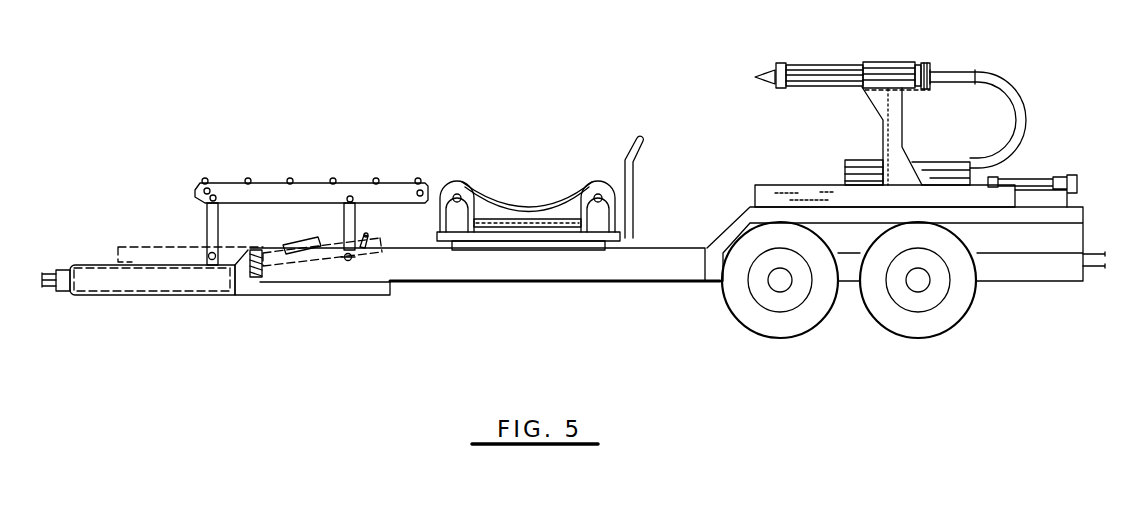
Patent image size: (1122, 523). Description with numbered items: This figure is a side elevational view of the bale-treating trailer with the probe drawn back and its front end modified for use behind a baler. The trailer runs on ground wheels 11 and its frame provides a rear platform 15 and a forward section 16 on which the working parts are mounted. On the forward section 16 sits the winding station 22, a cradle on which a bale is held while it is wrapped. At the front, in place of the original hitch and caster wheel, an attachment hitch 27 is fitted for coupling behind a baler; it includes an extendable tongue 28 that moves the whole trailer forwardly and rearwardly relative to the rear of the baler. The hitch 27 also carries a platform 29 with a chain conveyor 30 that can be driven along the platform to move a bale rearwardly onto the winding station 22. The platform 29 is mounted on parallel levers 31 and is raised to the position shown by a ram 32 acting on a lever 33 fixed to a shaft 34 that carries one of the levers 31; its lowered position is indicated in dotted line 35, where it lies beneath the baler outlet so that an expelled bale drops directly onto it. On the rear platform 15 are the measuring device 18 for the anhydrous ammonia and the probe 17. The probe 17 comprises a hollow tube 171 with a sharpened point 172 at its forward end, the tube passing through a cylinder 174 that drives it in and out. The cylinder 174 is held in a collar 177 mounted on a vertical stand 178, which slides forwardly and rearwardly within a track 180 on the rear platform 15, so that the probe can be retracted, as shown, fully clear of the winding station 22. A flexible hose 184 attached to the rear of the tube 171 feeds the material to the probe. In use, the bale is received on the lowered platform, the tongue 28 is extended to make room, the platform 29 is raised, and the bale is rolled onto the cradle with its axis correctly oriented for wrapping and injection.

The ground wheels 11 is at (745, 311).
The rear platform 15 is at (749, 208).
The forward section 16 is at (558, 283).
The probe 17 is at (823, 66).
The measuring device 18 is at (843, 167).
The winding station 22 is at (525, 167).
The attachment hitch 27 is at (155, 297).
The extendable tongue 28 is at (64, 297).
The platform 29 is at (262, 186).
The chain conveyor 30 is at (333, 180).
The parallel levers 31 is at (207, 217).
The ram 32 is at (303, 243).
The lever 33 is at (368, 240).
The shaft 34 is at (350, 262).
The lower position 35 is at (130, 246).
The hollow tube 171 is at (947, 70).
The sharpened point 172 is at (760, 74).
The cylinder 174 is at (828, 64).
The collar 177 is at (884, 62).
The vertical stand 178 is at (896, 127).
The track 180 is at (775, 196).
The flexible hose 184 is at (1024, 107).